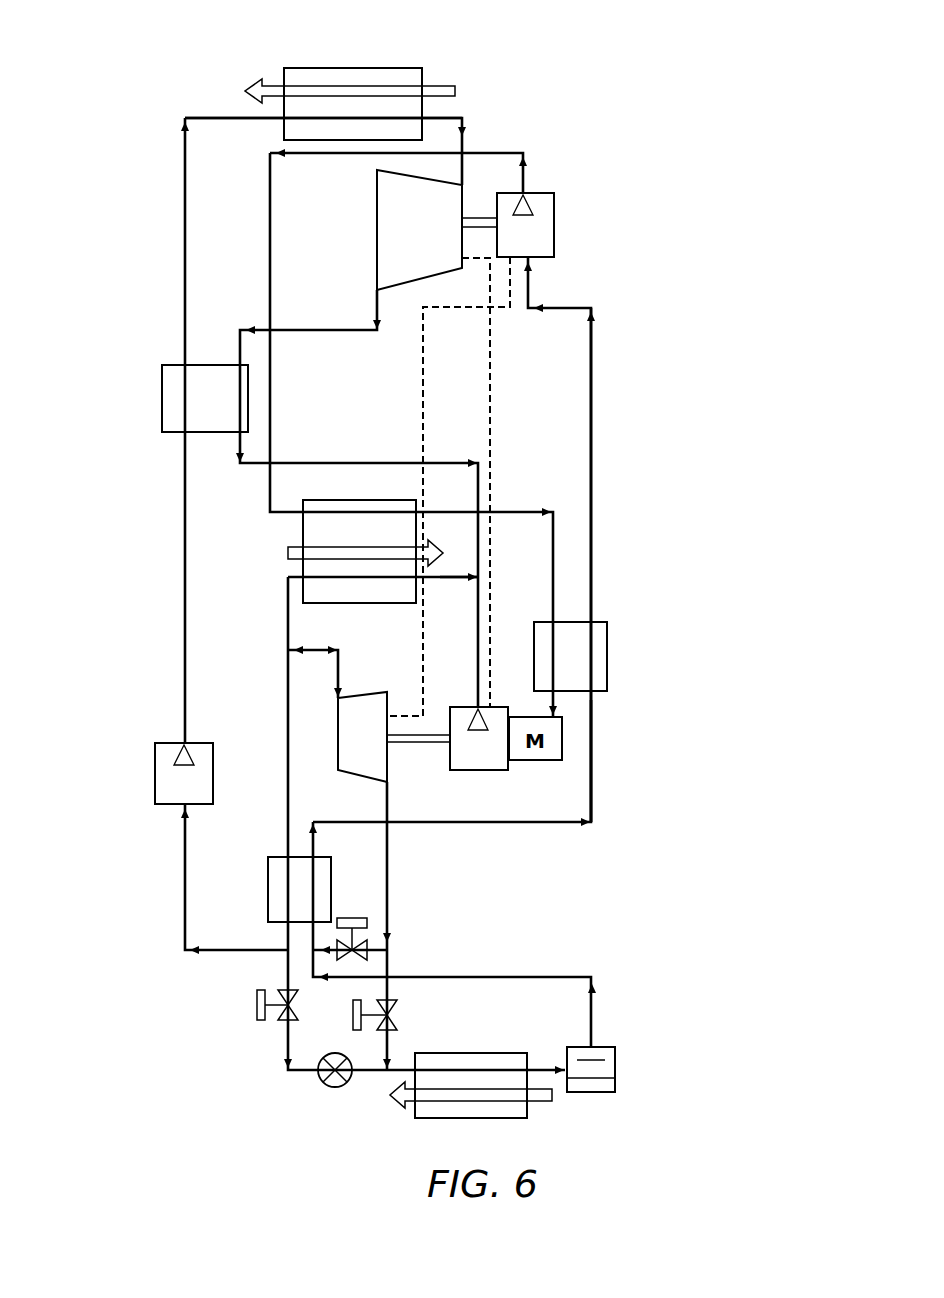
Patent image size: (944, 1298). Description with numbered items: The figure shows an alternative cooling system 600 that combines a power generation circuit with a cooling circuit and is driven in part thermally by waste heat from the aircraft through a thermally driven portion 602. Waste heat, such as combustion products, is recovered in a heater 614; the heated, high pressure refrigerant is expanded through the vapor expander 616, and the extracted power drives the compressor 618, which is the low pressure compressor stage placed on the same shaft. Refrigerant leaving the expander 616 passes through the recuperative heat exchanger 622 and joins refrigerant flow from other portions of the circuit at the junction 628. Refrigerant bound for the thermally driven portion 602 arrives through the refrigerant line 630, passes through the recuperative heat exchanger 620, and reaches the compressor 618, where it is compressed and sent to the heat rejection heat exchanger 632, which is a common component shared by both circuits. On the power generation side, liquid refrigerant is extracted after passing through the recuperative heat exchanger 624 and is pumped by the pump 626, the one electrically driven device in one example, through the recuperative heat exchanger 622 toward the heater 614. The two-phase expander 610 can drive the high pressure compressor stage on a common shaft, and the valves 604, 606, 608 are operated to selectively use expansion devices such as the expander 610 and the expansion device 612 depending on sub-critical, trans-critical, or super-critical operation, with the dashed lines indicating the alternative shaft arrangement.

The cooling system 600 is at (695, 257).
The thermally driven portion 602 is at (537, 97).
The valve 604 is at (355, 918).
The valve 606 is at (257, 1005).
The valve 608 is at (353, 1015).
The two-phase expander 610 is at (355, 698).
The expansion device 612 is at (335, 1088).
The heater 614 is at (298, 68).
The expander 616 is at (418, 280).
The compressor 618 is at (554, 215).
The recuperative heat exchanger 620 is at (607, 637).
The recuperative heat exchanger 622 is at (162, 385).
The recuperative heat exchanger 624 is at (268, 882).
The pump 626 is at (155, 765).
The junction 628 is at (483, 580).
The refrigerant line 630 is at (592, 802).
The heat rejection heat exchanger 632 is at (303, 535).